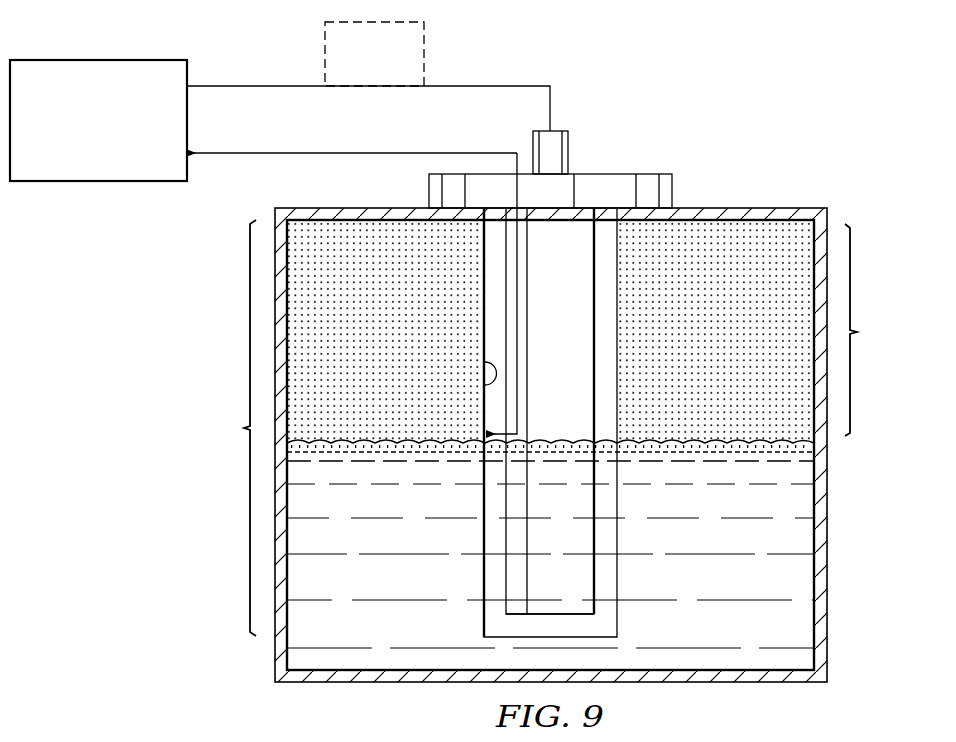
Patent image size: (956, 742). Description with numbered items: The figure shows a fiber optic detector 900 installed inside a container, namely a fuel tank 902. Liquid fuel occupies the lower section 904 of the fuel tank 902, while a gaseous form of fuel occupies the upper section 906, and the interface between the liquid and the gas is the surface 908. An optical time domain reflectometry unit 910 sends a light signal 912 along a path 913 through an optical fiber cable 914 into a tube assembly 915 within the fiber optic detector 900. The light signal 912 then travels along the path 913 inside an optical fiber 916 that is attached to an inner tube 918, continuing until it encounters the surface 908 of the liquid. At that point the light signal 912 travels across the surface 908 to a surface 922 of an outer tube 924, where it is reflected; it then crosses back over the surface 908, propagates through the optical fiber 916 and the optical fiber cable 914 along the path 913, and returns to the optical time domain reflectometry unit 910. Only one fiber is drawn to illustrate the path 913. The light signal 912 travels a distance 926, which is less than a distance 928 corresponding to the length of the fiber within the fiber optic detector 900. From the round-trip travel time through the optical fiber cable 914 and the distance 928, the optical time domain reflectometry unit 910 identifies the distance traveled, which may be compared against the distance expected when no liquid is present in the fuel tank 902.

The fiber optic detector 900 is at (672, 190).
The fuel tank 902 is at (738, 683).
The section 904 is at (365, 517).
The section 906 is at (696, 321).
The surface 908 is at (386, 440).
The optical time domain reflectometry unit 910 is at (83, 60).
The light signal 912 is at (424, 43).
The path 913 is at (348, 153).
The optical fiber cable 914 is at (550, 112).
The tube assembly 915 is at (608, 617).
The optical fiber 916 is at (506, 569).
The inner tube 918 is at (578, 590).
The surface 922 is at (485, 362).
The outer tube 924 is at (617, 569).
The distance 926 is at (874, 330).
The distance 928 is at (227, 428).